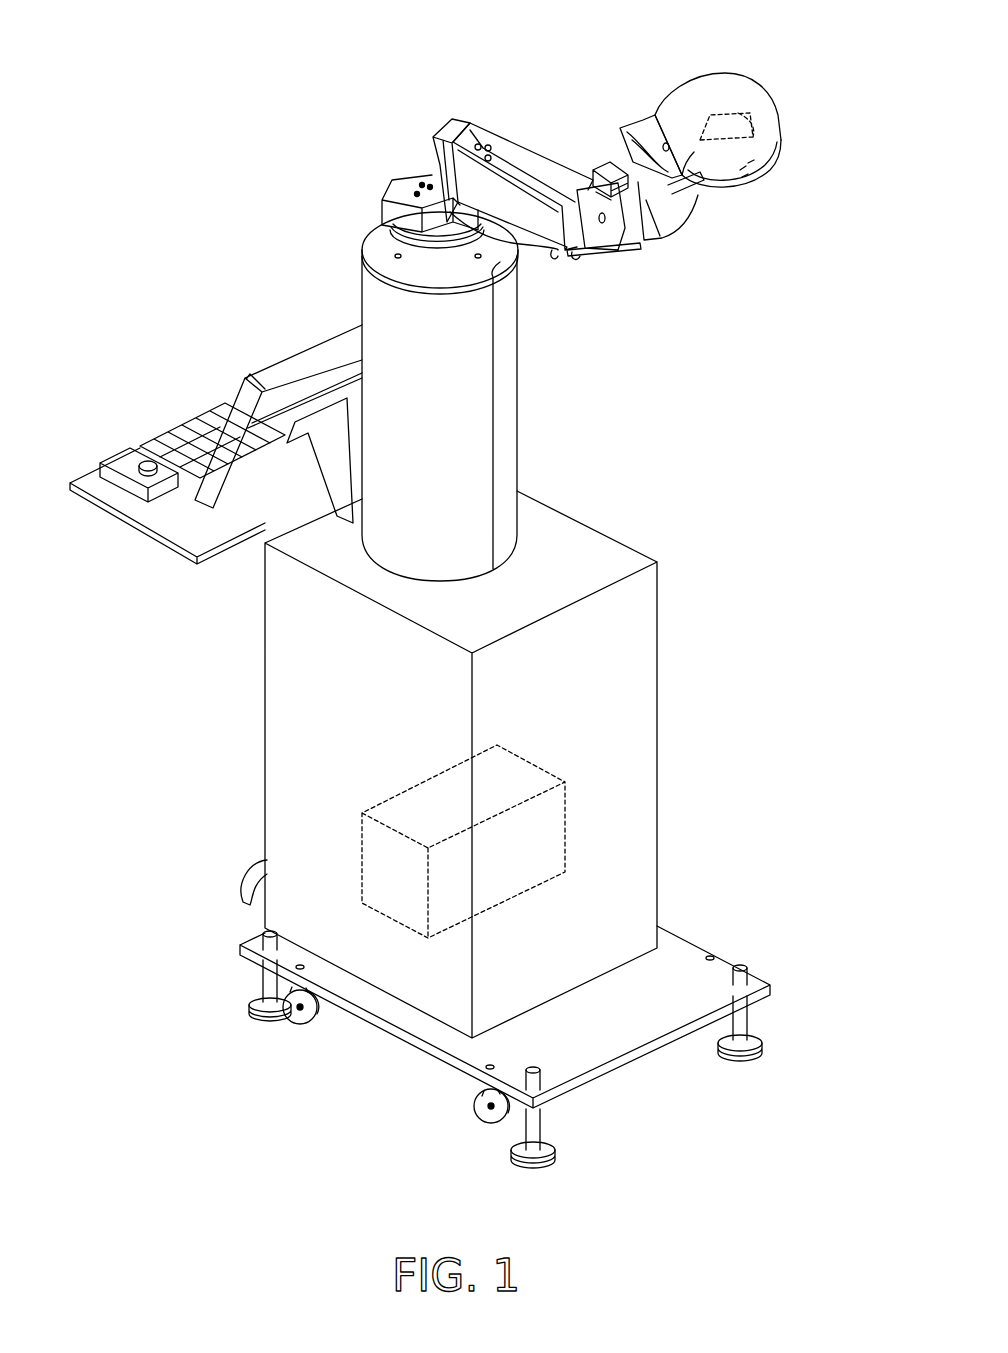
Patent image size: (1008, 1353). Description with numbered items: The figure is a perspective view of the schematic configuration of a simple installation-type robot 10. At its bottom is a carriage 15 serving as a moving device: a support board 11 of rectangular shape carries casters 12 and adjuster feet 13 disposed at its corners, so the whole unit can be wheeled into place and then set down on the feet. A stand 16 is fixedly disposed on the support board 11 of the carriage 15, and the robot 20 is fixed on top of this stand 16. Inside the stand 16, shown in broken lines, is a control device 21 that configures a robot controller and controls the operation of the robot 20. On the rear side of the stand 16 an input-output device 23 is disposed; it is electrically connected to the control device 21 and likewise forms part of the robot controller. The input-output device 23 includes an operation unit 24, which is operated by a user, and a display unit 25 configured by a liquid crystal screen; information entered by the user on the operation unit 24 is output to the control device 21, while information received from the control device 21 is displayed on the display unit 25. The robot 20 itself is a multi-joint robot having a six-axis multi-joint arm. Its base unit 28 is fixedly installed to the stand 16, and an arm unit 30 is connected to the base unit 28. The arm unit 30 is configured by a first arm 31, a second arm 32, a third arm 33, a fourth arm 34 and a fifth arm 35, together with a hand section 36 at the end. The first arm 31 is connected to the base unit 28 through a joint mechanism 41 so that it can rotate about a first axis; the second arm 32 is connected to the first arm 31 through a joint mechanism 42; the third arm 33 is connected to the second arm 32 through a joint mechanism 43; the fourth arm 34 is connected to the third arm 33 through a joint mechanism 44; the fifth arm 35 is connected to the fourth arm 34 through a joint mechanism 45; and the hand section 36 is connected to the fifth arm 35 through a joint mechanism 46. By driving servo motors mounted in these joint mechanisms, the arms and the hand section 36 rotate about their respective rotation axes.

The simple installation-type robot 10 is at (170, 106).
The support board 11 is at (662, 1052).
The casters 12 is at (314, 1020).
The adjuster feet 13 is at (276, 1027).
The carriage 15 is at (243, 976).
The stand 16 is at (265, 716).
The robot 20 is at (786, 52).
The control device 21 is at (383, 800).
The input-output device 23 is at (114, 530).
The operation unit 24 is at (140, 450).
The display unit 25 is at (287, 362).
The base unit 28 is at (520, 397).
The arm unit 30 is at (542, 150).
The first arm 31 is at (385, 197).
The second arm 32 is at (579, 257).
The third arm 33 is at (683, 197).
The fourth arm 34 is at (681, 178).
The fifth arm 35 is at (762, 72).
The hand section 36 is at (734, 183).
The joint mechanism 41 is at (391, 232).
The joint mechanism 42 is at (465, 118).
The joint mechanism 43 is at (607, 250).
The joint mechanism 44 is at (619, 167).
The joint mechanism 45 is at (652, 130).
The joint mechanism 46 is at (768, 124).